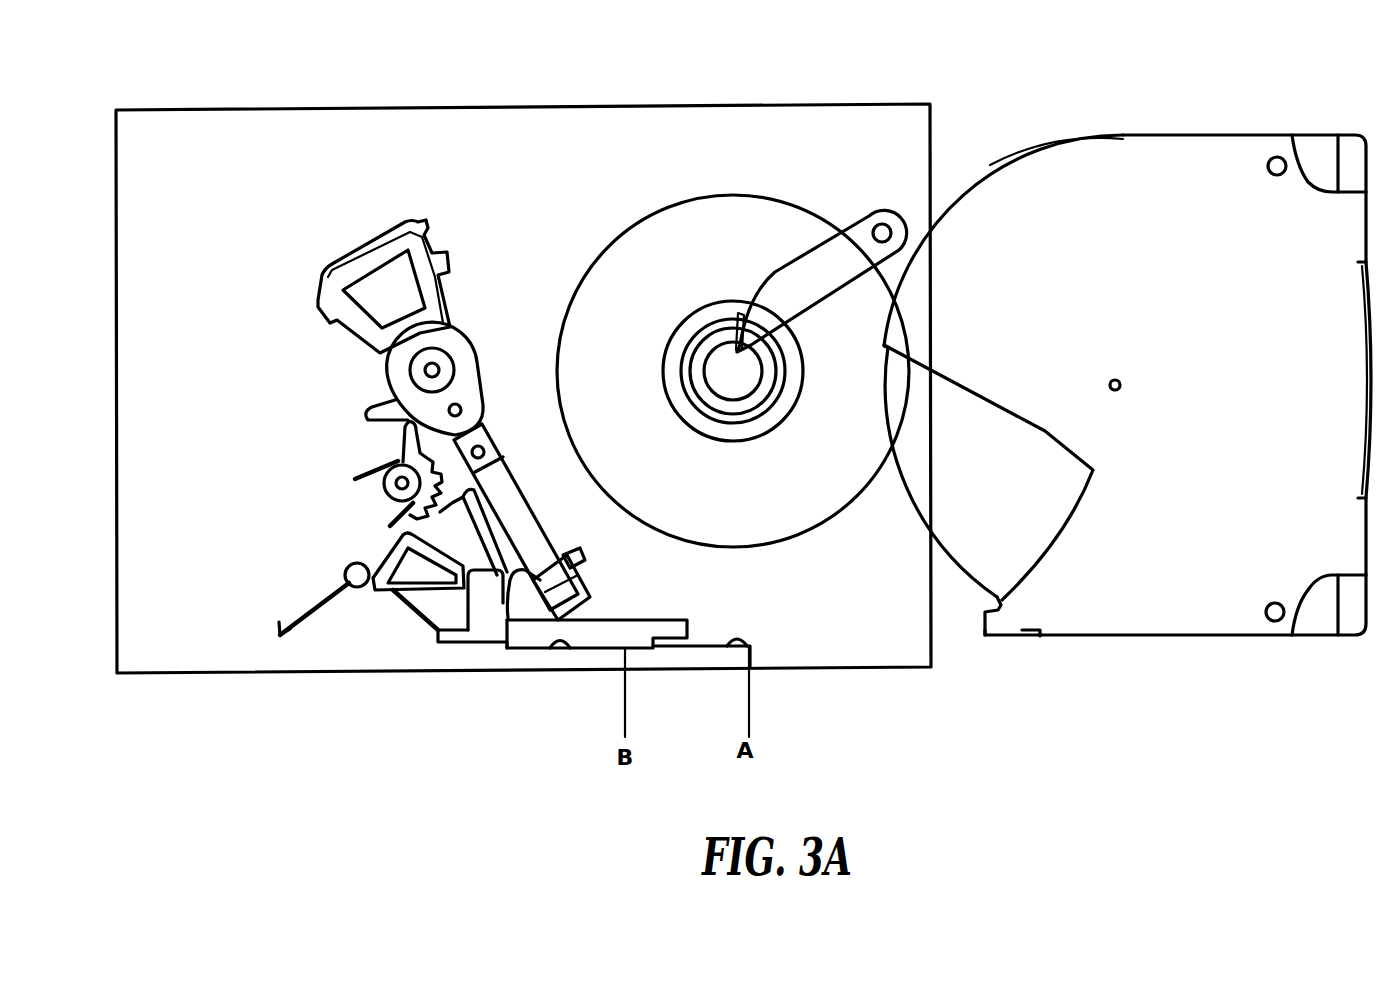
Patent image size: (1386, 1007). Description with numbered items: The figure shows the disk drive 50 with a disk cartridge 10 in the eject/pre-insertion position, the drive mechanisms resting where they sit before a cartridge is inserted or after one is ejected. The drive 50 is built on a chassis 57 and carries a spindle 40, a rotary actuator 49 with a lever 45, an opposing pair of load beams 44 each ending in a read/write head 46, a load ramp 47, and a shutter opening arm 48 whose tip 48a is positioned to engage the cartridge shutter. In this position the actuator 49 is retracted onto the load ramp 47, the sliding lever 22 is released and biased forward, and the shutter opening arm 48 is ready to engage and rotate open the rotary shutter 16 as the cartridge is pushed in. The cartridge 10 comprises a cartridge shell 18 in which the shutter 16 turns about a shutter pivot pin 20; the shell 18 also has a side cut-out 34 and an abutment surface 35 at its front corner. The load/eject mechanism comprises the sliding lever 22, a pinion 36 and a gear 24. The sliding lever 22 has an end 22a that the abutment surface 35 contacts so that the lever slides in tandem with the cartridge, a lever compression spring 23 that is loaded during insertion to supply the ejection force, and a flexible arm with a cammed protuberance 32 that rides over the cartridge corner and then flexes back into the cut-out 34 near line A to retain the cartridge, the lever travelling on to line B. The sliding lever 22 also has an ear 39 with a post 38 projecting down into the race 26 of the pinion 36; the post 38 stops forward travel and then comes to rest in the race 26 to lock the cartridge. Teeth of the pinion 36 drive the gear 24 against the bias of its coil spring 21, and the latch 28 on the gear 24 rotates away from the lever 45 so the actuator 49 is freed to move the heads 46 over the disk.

The disk cartridge 10 is at (1205, 108).
The rotary shutter 16 is at (970, 530).
The cartridge shell 18 is at (1100, 152).
The shutter pivot pin 20 is at (1118, 380).
The coil spring 21 is at (397, 498).
The sliding lever 22 is at (547, 637).
The end of sliding lever 22a is at (693, 627).
The lever compression spring 23 is at (322, 587).
The gear 24 is at (397, 467).
The race 26 is at (390, 593).
The latch 28 is at (400, 440).
The protuberance 32 is at (727, 640).
The side cut-out 34 is at (1027, 636).
The abutment surface 35 is at (980, 632).
The pinion 36 is at (430, 555).
The post 38 is at (475, 580).
The ear 39 is at (495, 605).
The spindle 40 is at (700, 308).
The load beam 44 is at (508, 473).
The lever 45 is at (375, 410).
The read/write head 46 is at (585, 590).
The load ramp 47 is at (590, 552).
The shutter opening arm 48 is at (850, 215).
The load arm tip 48a is at (772, 325).
The actuator 49 is at (478, 345).
The disk drive 50 is at (277, 717).
The chassis 57 is at (313, 135).